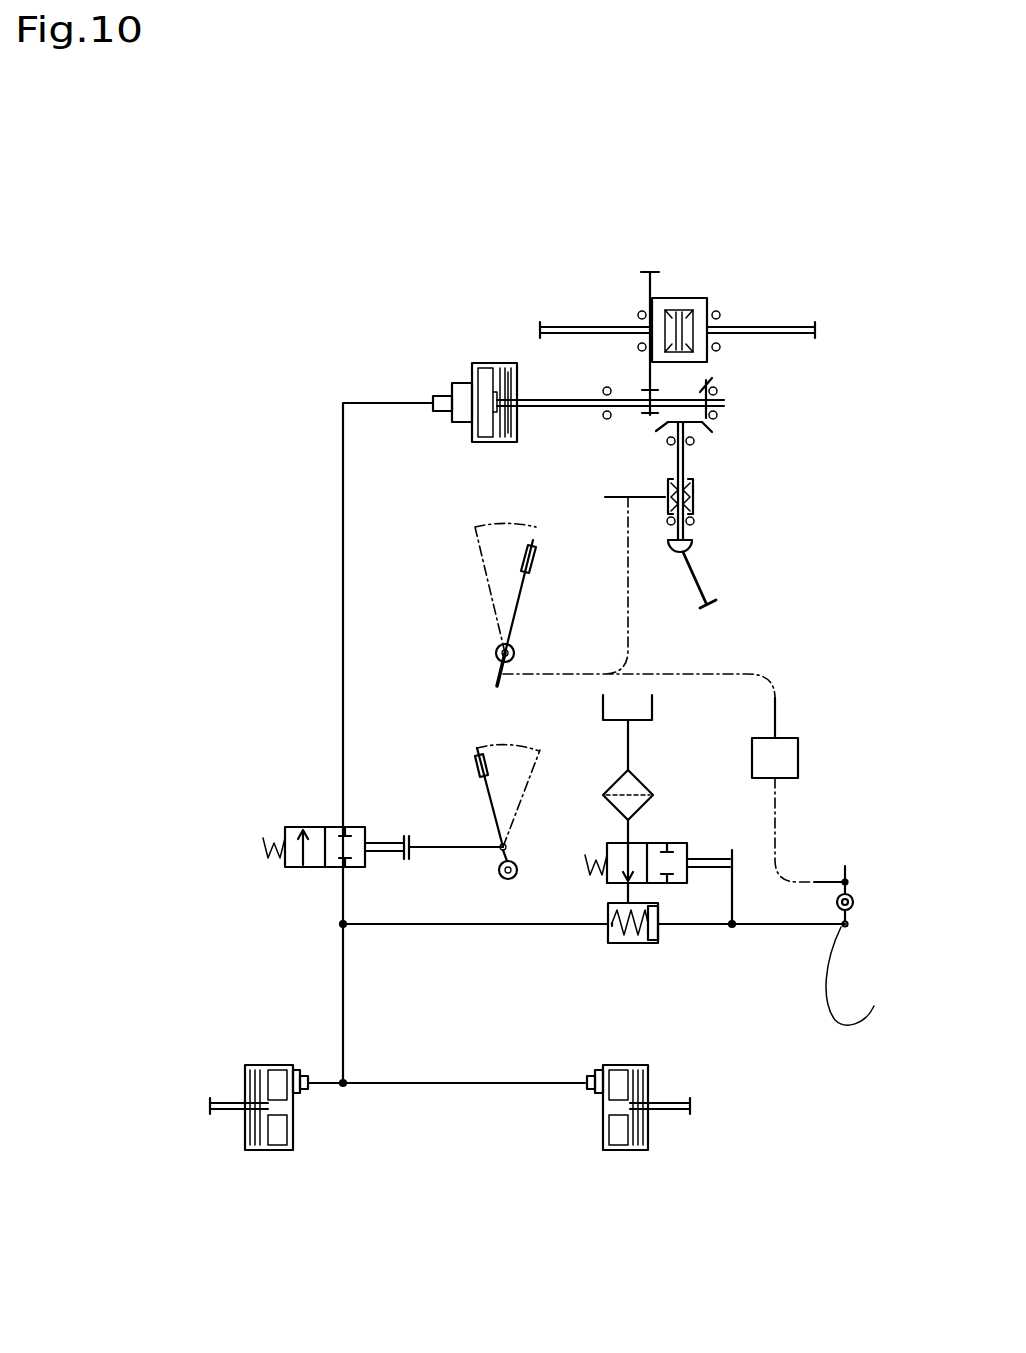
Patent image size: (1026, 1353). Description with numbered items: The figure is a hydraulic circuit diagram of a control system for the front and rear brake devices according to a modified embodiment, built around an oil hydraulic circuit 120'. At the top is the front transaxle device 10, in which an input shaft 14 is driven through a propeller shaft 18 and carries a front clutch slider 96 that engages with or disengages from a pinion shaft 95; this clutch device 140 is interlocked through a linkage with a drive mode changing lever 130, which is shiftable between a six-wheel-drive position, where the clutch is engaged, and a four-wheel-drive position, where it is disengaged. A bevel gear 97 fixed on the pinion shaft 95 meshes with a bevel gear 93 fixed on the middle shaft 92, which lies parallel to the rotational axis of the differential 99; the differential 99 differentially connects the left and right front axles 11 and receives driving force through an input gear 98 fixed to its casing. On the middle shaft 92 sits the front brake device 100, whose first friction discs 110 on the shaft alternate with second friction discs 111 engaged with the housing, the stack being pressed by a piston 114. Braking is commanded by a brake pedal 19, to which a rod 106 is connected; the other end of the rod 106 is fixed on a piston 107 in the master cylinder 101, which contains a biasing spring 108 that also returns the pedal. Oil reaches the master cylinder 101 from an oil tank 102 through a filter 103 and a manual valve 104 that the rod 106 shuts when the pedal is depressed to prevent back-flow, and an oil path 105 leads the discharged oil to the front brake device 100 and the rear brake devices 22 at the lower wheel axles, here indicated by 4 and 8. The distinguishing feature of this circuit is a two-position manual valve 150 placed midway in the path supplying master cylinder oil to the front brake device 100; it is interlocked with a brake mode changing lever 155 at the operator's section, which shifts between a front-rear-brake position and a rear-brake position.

The front transaxle device 10 is at (615, 222).
The front axles 11 is at (570, 326).
The differential 99 is at (687, 293).
The input gear 98 is at (656, 270).
The middle shaft 92 is at (726, 403).
The bevel gear 93 is at (708, 377).
The bevel gear 97 is at (645, 423).
The pinion shaft 95 is at (686, 468).
The front clutch slider 96 is at (697, 497).
The clutch device 140 is at (757, 515).
The input shaft 14 is at (695, 540).
The propeller shaft 18 is at (703, 587).
The front brake device 100 is at (497, 350).
The piston 114 is at (457, 385).
The first friction discs 110 is at (516, 409).
The second friction discs 111 is at (512, 441).
The drive mode changing lever 130 is at (520, 608).
The brake mode changing lever 155 is at (500, 832).
The manual valve 150 is at (318, 827).
The manual valve 104 is at (663, 843).
The oil tank 102 is at (652, 708).
The filter 103 is at (641, 777).
The biasing spring 108 is at (630, 944).
The piston 107 is at (668, 937).
The master cylinder 101 is at (606, 938).
The rod 106 is at (718, 928).
The oil path 105 is at (430, 958).
The oil hydraulic circuit 120' is at (310, 743).
The brake pedal 19 is at (876, 1010).
The front axle 4 is at (442, 1205).
The rear brake devices 22 is at (270, 1166).
The wheel shaft 8 is at (238, 1110).